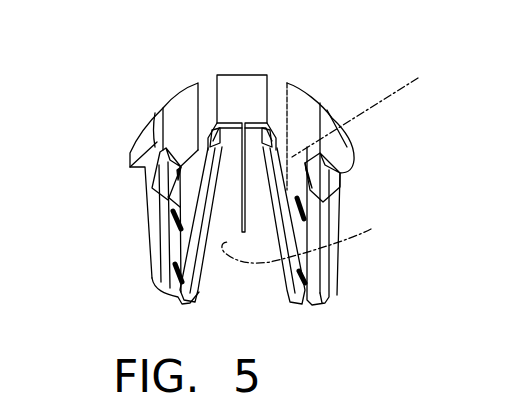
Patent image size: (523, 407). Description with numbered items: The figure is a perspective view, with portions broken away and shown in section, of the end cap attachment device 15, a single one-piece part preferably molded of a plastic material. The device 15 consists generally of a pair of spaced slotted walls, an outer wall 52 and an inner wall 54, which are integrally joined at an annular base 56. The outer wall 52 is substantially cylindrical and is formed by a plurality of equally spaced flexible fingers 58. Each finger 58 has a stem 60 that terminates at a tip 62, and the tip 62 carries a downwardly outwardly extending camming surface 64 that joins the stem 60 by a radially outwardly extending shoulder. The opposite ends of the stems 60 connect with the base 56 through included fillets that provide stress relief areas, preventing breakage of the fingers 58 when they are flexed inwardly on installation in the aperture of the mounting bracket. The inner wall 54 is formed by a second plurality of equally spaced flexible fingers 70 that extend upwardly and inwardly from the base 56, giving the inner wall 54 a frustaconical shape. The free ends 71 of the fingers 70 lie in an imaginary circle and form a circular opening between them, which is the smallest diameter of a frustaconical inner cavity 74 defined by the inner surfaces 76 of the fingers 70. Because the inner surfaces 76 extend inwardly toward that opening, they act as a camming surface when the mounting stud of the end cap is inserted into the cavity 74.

The end cap attachment device 15 is at (149, 200).
The outer wall 52 is at (194, 82).
The inner wall 54 is at (231, 241).
The annular base 56 is at (186, 300).
The flexible fingers 58 is at (342, 216).
The stem 60 is at (150, 228).
The tip 62 is at (288, 84).
The camming surface 64 is at (346, 143).
The flexible fingers 70 is at (368, 109).
The free ends 71 is at (222, 120).
The frustaconical inner cavity 74 is at (310, 238).
The inner surfaces 76 is at (206, 260).